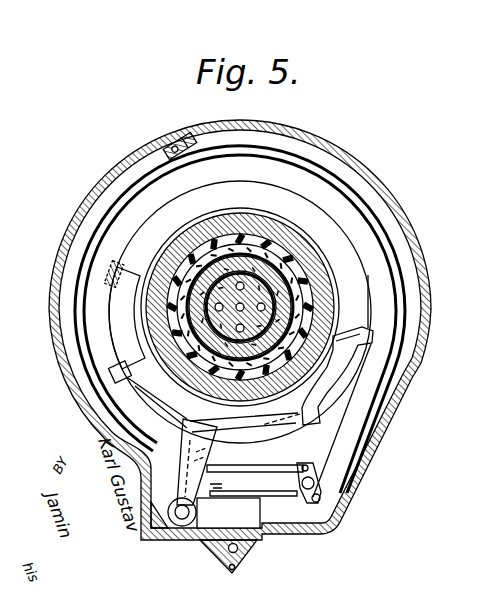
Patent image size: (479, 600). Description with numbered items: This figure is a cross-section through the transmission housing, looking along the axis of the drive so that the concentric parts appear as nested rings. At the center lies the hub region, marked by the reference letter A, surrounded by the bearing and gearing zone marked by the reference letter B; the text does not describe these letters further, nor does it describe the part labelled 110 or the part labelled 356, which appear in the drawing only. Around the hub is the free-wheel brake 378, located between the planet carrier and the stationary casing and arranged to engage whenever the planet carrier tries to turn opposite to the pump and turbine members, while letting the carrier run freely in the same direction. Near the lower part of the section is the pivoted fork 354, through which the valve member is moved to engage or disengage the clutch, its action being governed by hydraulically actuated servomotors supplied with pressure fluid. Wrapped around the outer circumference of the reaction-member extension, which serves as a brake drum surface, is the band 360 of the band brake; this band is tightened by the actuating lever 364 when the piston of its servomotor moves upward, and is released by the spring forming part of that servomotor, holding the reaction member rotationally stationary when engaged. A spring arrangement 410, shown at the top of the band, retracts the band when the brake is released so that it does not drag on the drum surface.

The brake housing 110 is at (302, 297).
The free-wheel brake 378 is at (270, 224).
The bearing B is at (288, 286).
The hub A is at (225, 258).
The spring arrangement 410 is at (172, 142).
The left brake shoe and strut 356 is at (202, 383).
The pivoted fork 354 is at (336, 373).
The actuating lever 364 is at (293, 490).
The band 360 is at (352, 450).